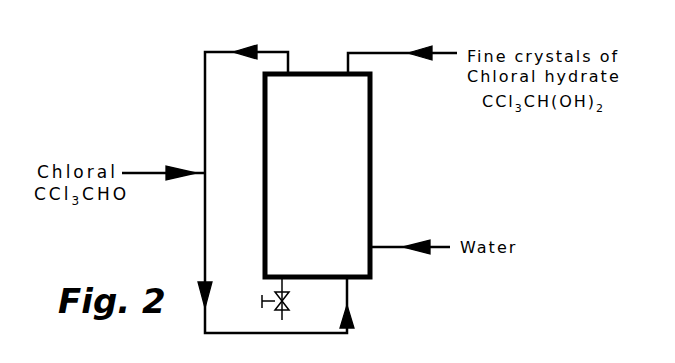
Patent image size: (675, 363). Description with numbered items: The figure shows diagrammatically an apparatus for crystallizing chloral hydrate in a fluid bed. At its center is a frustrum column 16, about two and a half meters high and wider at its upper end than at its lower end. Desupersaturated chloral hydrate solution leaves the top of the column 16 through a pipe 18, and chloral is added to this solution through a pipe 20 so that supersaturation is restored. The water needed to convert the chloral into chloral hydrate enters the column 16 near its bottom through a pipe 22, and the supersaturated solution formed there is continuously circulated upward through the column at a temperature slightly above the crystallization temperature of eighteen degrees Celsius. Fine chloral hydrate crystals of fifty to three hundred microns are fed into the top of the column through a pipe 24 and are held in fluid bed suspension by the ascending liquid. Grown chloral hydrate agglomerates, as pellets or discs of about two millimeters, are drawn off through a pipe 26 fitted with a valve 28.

The frustrum column 16 is at (373, 150).
The pipe 18 is at (203, 73).
The pipe 20 is at (147, 173).
The pipe 22 is at (383, 249).
The pipe 24 is at (373, 53).
The pipe 26 is at (277, 318).
The valve 28 is at (268, 292).